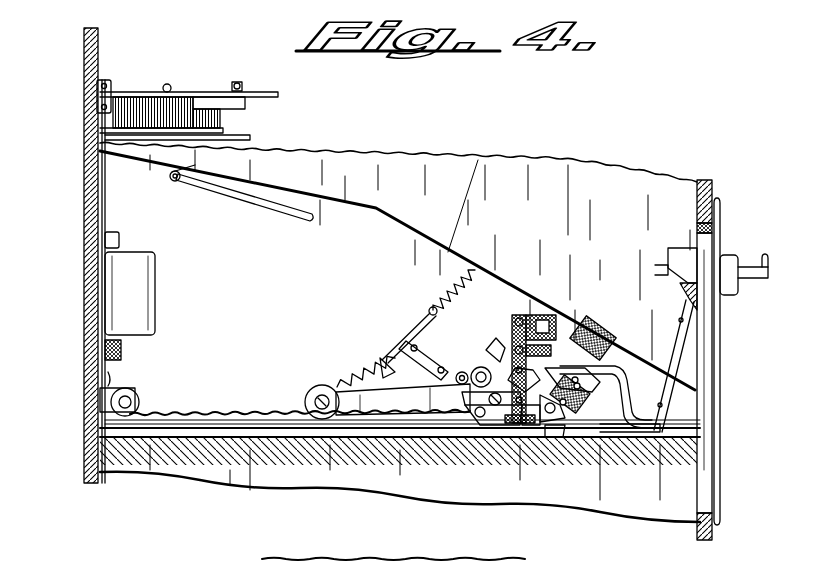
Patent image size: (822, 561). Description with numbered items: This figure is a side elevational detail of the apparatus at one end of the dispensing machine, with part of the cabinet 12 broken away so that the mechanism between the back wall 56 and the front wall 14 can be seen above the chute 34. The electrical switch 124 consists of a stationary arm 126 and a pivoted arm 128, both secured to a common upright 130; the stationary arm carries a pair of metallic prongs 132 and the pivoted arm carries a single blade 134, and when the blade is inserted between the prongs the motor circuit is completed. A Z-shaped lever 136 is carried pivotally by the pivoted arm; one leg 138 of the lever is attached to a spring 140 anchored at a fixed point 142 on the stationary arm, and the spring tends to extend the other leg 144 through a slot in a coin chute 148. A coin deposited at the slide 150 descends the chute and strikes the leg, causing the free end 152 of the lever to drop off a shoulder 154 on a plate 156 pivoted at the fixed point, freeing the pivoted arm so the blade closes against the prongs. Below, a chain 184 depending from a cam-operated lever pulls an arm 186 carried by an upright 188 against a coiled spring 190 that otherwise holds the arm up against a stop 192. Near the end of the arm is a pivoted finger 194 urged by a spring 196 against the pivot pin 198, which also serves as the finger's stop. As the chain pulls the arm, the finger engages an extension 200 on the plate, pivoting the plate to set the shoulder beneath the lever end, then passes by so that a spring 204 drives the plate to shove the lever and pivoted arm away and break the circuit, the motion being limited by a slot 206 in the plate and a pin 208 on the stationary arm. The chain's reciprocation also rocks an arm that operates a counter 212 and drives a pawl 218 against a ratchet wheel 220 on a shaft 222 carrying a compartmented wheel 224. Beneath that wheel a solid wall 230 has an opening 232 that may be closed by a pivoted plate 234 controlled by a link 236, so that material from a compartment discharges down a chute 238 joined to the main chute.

The cabinet 12 is at (84, 276).
The front wall 14 is at (718, 190).
The chute 34 is at (590, 170).
The back wall 56 is at (100, 238).
The switch 124 is at (590, 272).
The stationary arm 126 is at (530, 318).
The pivoted arm 128 is at (608, 328).
The upright 130 is at (582, 402).
The metallic prongs 132 is at (548, 343).
The blade 134 is at (595, 320).
The Z-shaped lever 136 is at (628, 368).
The leg 138 is at (516, 325).
The spring 140 is at (545, 425).
The fixed point 142 is at (540, 418).
The leg 144 is at (640, 405).
The coin chute 148 is at (700, 358).
The slide 150 is at (744, 256).
The free end 152 is at (514, 348).
The shoulder 154 is at (512, 412).
The plate 156 is at (503, 405).
The chain 184 is at (130, 385).
The arm 186 is at (392, 372).
The upright 188 is at (365, 395).
The coiled spring 190 is at (343, 384).
The stop 192 is at (403, 399).
The finger 194 is at (495, 375).
The spring 196 is at (448, 360).
The pivot pin 198 is at (470, 385).
The extension 200 is at (497, 427).
The spring 204 is at (478, 425).
The slot 206 is at (587, 437).
The pin 208 is at (530, 427).
The counter 212 is at (124, 347).
The pawl 218 is at (124, 94).
The ratchet wheel 220 is at (133, 104).
The shaft 222 is at (170, 86).
The wheel 224 is at (222, 120).
The solid wall 230 is at (255, 138).
The opening 232 is at (198, 184).
The plate 234 is at (170, 178).
The link 236 is at (262, 207).
The chute 238 is at (354, 205).